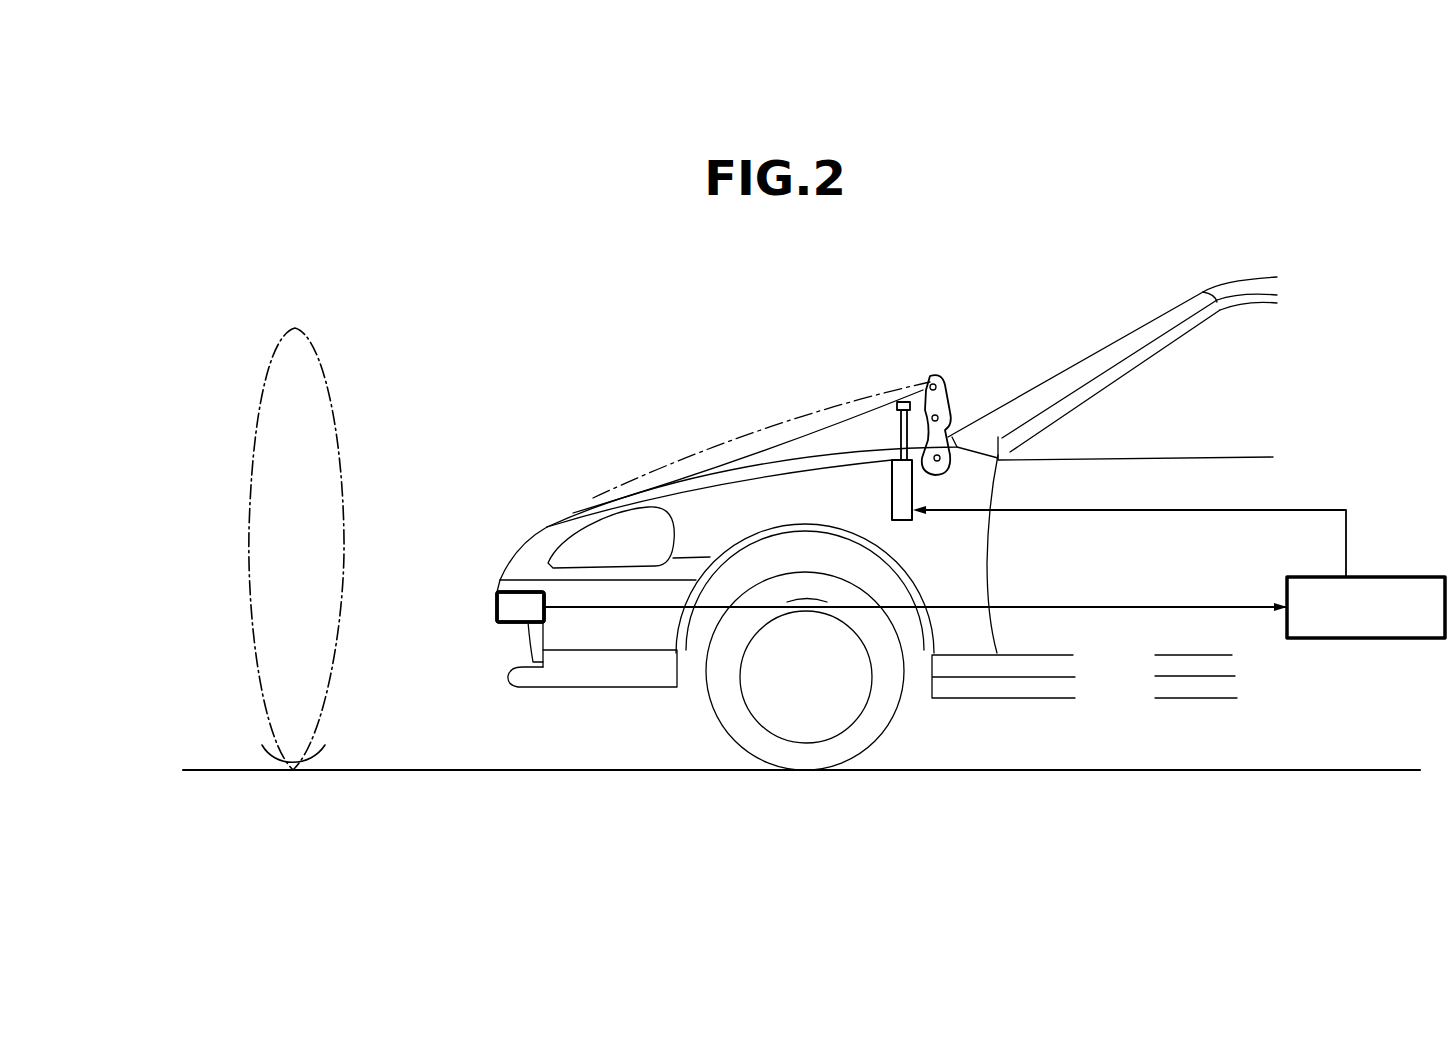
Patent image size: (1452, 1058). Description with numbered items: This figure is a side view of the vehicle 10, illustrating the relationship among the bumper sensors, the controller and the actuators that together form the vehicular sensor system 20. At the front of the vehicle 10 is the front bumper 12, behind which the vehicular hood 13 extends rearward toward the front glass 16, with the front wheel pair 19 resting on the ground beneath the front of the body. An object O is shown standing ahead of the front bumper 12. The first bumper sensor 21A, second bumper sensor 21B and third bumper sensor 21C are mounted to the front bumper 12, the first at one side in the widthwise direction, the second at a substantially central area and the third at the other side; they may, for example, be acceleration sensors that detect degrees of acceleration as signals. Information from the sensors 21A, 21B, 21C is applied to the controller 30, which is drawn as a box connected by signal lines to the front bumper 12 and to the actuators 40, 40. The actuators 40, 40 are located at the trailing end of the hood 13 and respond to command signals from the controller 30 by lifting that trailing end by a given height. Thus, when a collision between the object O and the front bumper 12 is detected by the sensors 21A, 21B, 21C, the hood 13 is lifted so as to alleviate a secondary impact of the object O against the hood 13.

The object O is at (322, 357).
The vehicle 10 is at (968, 300).
The front bumper 12 is at (513, 590).
The vehicular hood 13 is at (743, 462).
The front glass 16 is at (1068, 362).
The front wheel pair 19 is at (887, 733).
The vehicular sensor system 20 is at (672, 332).
The first bumper sensor 21A is at (497, 608).
The second bumper sensor 21B is at (504, 505).
The third bumper sensor 21C is at (543, 505).
The controller 30 is at (1380, 577).
The actuators 40 is at (883, 490).